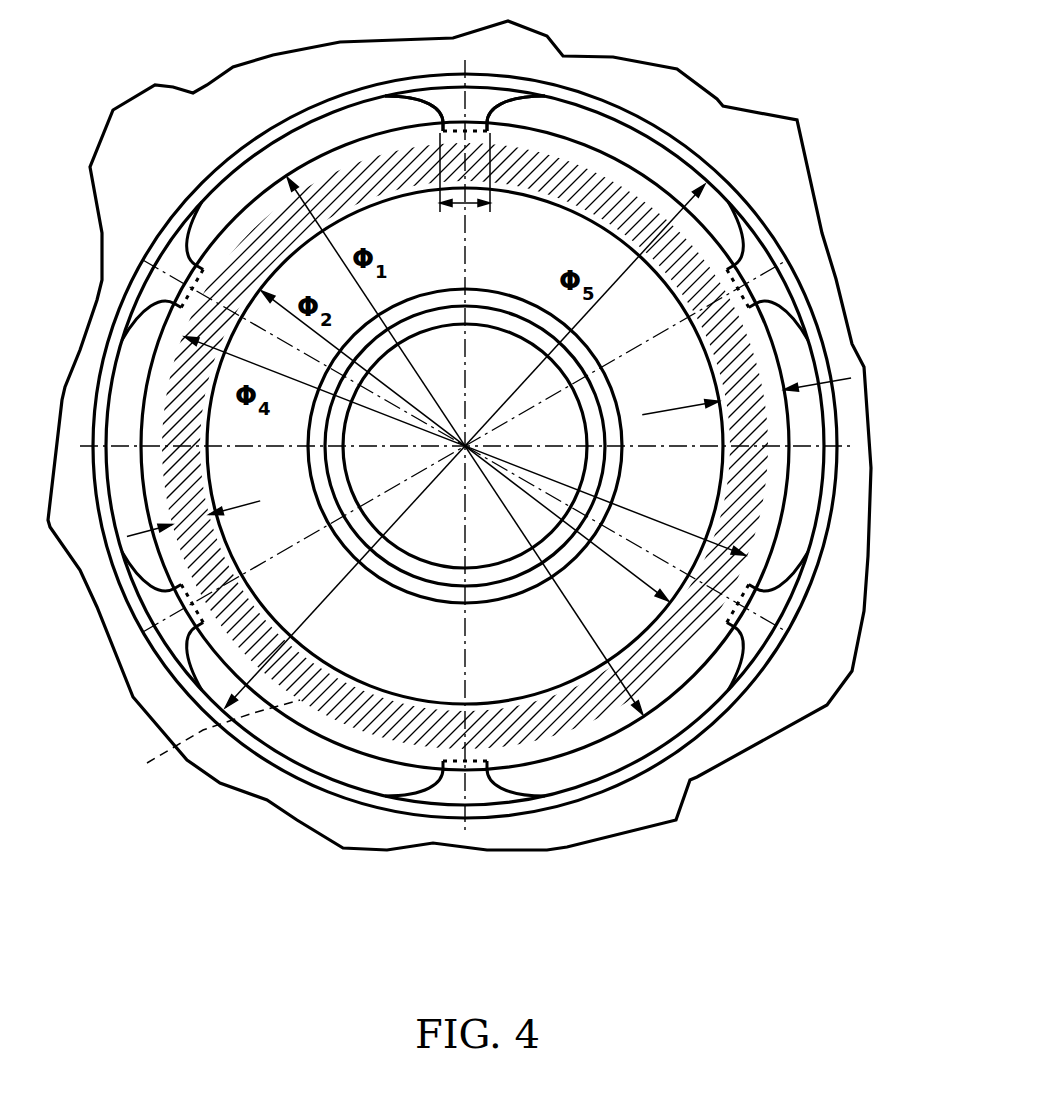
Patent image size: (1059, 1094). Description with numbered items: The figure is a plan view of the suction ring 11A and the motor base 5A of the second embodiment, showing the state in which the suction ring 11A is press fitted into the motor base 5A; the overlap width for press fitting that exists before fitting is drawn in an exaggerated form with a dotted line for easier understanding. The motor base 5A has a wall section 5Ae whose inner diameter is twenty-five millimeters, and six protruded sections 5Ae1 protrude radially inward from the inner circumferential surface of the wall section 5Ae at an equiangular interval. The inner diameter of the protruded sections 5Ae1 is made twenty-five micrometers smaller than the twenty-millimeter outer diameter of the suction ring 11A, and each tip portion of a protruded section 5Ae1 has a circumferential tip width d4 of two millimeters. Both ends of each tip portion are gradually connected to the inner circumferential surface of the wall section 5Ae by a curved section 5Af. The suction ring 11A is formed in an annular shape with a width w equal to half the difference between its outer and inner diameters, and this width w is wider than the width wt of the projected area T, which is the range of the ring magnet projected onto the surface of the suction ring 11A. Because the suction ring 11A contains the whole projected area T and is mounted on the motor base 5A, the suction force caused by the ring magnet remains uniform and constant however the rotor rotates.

The motor base 5A is at (197, 110).
The wall section 5Ae is at (667, 137).
The protruded section 5Ae1 is at (493, 106).
The curved section 5Af is at (373, 108).
The suction ring 11A is at (677, 683).
The tip width d4 is at (477, 190).
The width of the suction ring w is at (747, 396).
The width of the projected area wt is at (193, 507).
The projected area T is at (216, 753).